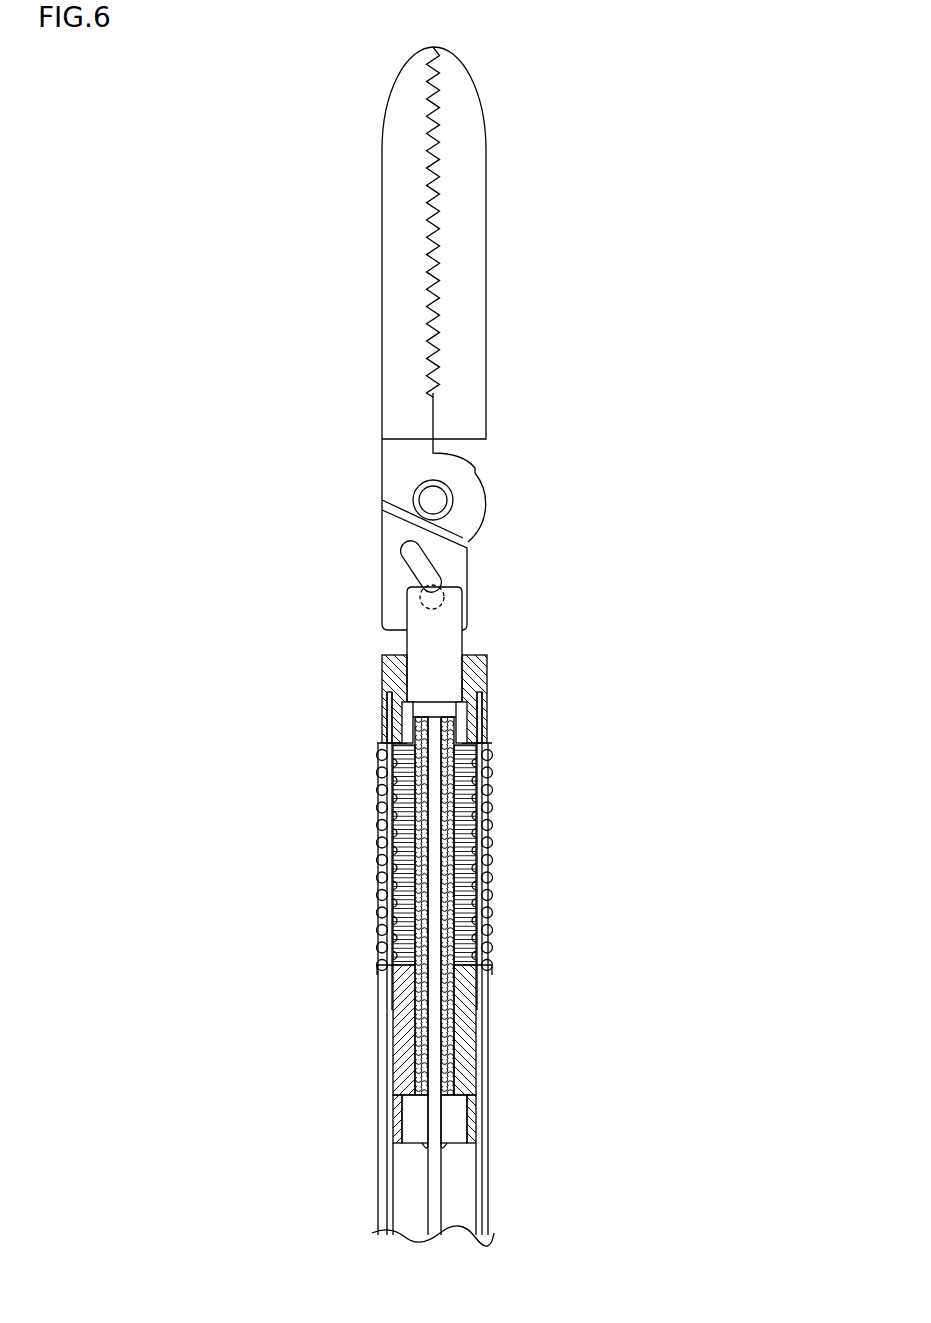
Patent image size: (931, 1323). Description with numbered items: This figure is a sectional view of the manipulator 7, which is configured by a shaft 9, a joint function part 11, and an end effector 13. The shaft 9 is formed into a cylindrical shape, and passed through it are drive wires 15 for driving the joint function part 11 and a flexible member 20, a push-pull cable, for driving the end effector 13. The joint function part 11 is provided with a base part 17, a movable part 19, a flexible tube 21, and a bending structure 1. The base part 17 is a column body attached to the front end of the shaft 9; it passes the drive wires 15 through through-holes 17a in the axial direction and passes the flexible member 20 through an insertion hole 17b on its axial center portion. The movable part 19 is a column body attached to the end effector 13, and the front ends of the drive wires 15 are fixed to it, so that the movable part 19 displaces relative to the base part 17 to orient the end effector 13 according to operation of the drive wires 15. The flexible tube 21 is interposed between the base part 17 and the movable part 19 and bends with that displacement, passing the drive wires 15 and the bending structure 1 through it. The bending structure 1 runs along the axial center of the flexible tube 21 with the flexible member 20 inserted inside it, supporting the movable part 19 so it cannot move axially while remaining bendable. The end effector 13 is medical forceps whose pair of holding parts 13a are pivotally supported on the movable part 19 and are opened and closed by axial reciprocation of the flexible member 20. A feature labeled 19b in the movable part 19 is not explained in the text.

The manipulator 7 is at (562, 89).
The end effector 13 is at (496, 288).
The holding parts 13a is at (402, 222).
The movable part 19 is at (487, 657).
The engaging portion 19b is at (415, 694).
The joint function part 11 is at (499, 777).
The drive wires 15 is at (385, 830).
The flexible tube 21 is at (490, 893).
The flexible member 20 is at (490, 806).
The bending structure 1 is at (417, 935).
The base part 17 is at (490, 980).
The through-holes 17a is at (380, 980).
The insertion hole 17b is at (400, 1108).
The shaft 9 is at (501, 1058).